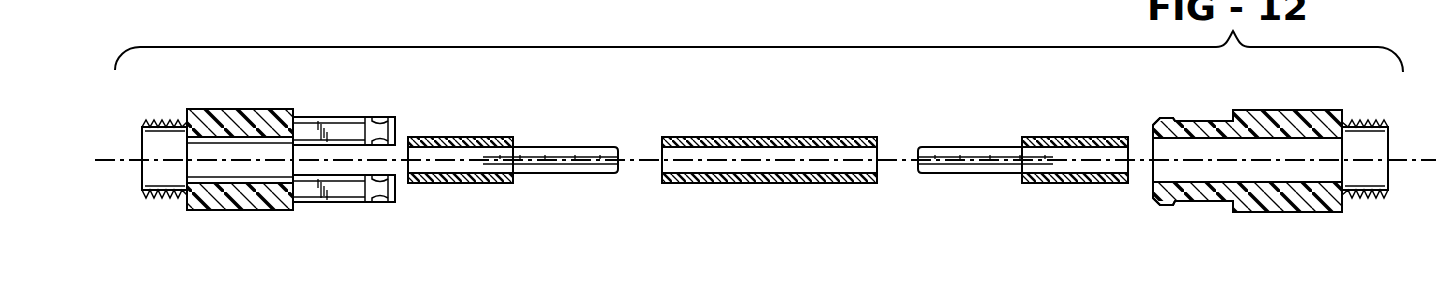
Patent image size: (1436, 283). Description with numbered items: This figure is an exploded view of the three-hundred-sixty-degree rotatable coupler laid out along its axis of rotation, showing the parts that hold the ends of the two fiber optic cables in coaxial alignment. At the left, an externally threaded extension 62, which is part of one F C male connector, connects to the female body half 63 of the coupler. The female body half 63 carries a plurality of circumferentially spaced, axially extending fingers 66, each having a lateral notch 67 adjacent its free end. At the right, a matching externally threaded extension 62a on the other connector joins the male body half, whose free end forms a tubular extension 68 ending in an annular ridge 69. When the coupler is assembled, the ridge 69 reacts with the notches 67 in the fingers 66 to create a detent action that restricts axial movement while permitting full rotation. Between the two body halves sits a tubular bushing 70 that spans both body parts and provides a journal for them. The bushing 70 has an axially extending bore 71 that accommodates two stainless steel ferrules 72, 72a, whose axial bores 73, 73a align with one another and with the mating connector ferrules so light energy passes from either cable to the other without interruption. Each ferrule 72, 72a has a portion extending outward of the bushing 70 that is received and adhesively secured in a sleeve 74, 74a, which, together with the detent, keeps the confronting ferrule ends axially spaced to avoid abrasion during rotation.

The externally threaded extension 62 is at (158, 197).
The externally threaded extension 62a is at (1368, 198).
The female body half 63 is at (226, 214).
The fingers 66 is at (335, 117).
The lateral notch 67 is at (377, 203).
The tubular extension 68 is at (1210, 203).
The annular ridge 69 is at (1152, 204).
The tubular bushing 70 is at (746, 137).
The axially extending bore 71 is at (826, 147).
The ferrule 72 is at (587, 173).
The ferrule 72a is at (972, 173).
The axial bore 73 is at (572, 157).
The axial bore 73a is at (972, 157).
The sleeve 74 is at (468, 137).
The sleeve 74a is at (1092, 137).